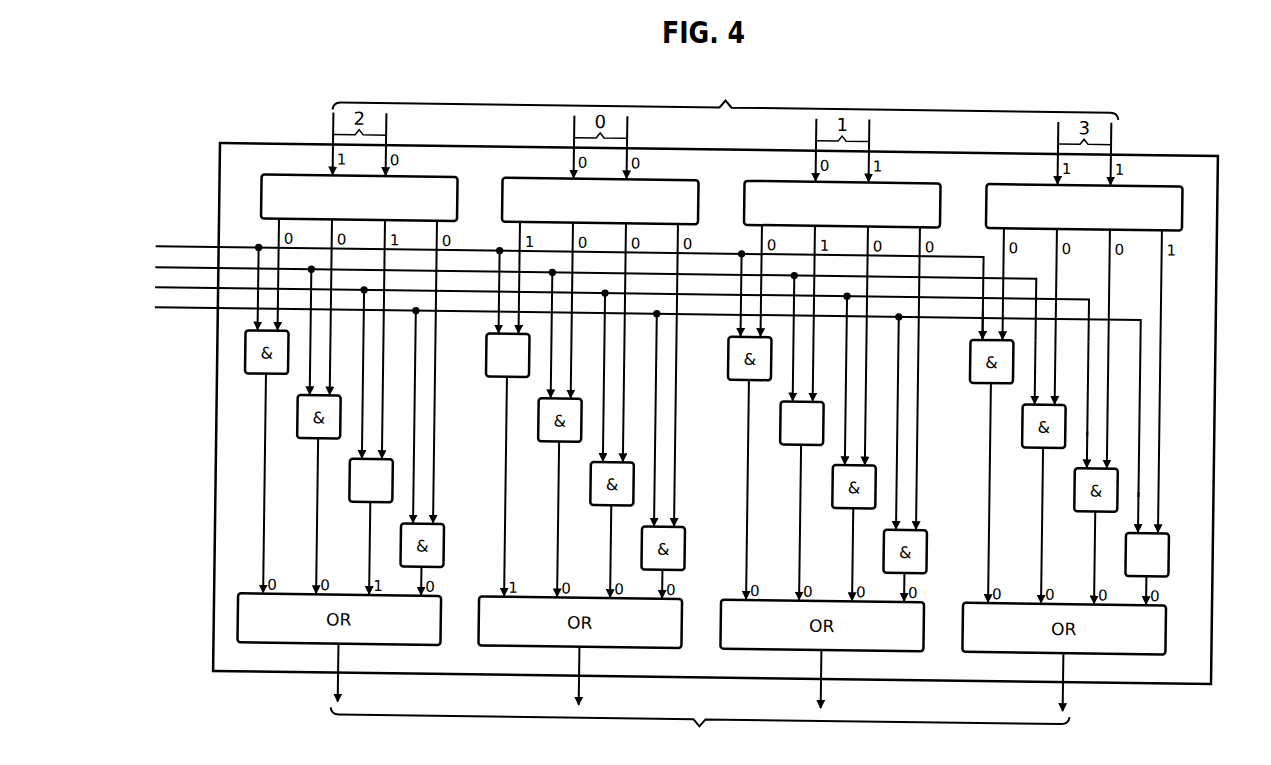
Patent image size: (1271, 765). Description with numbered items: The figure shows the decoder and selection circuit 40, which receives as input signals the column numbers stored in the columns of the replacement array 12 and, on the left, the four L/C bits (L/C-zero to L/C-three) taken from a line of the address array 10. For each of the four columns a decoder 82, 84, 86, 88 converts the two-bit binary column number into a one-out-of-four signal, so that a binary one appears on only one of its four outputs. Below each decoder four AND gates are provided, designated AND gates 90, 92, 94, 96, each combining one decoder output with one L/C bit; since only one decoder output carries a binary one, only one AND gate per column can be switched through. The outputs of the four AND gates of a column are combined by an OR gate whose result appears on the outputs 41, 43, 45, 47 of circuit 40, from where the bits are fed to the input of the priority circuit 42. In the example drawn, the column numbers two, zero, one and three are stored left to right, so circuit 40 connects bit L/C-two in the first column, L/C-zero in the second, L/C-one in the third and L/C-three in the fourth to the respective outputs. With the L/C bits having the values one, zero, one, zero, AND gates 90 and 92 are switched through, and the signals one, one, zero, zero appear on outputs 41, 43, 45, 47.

The decoder and selection circuit 40 is at (1218, 271).
The address array 10 is at (152, 240).
The replacement array 12 is at (725, 101).
The priority circuit 42 is at (700, 735).
The decoder 82 is at (458, 179).
The decoder 84 is at (699, 179).
The decoder 86 is at (941, 179).
The decoder 88 is at (1183, 179).
The AND gate 90 is at (354, 497).
The AND gate 92 is at (490, 372).
The AND gate 94 is at (786, 437).
The AND gate 96 is at (1172, 570).
The output 41 is at (346, 687).
The output 43 is at (587, 687).
The output 45 is at (829, 687).
The output 47 is at (1071, 687).